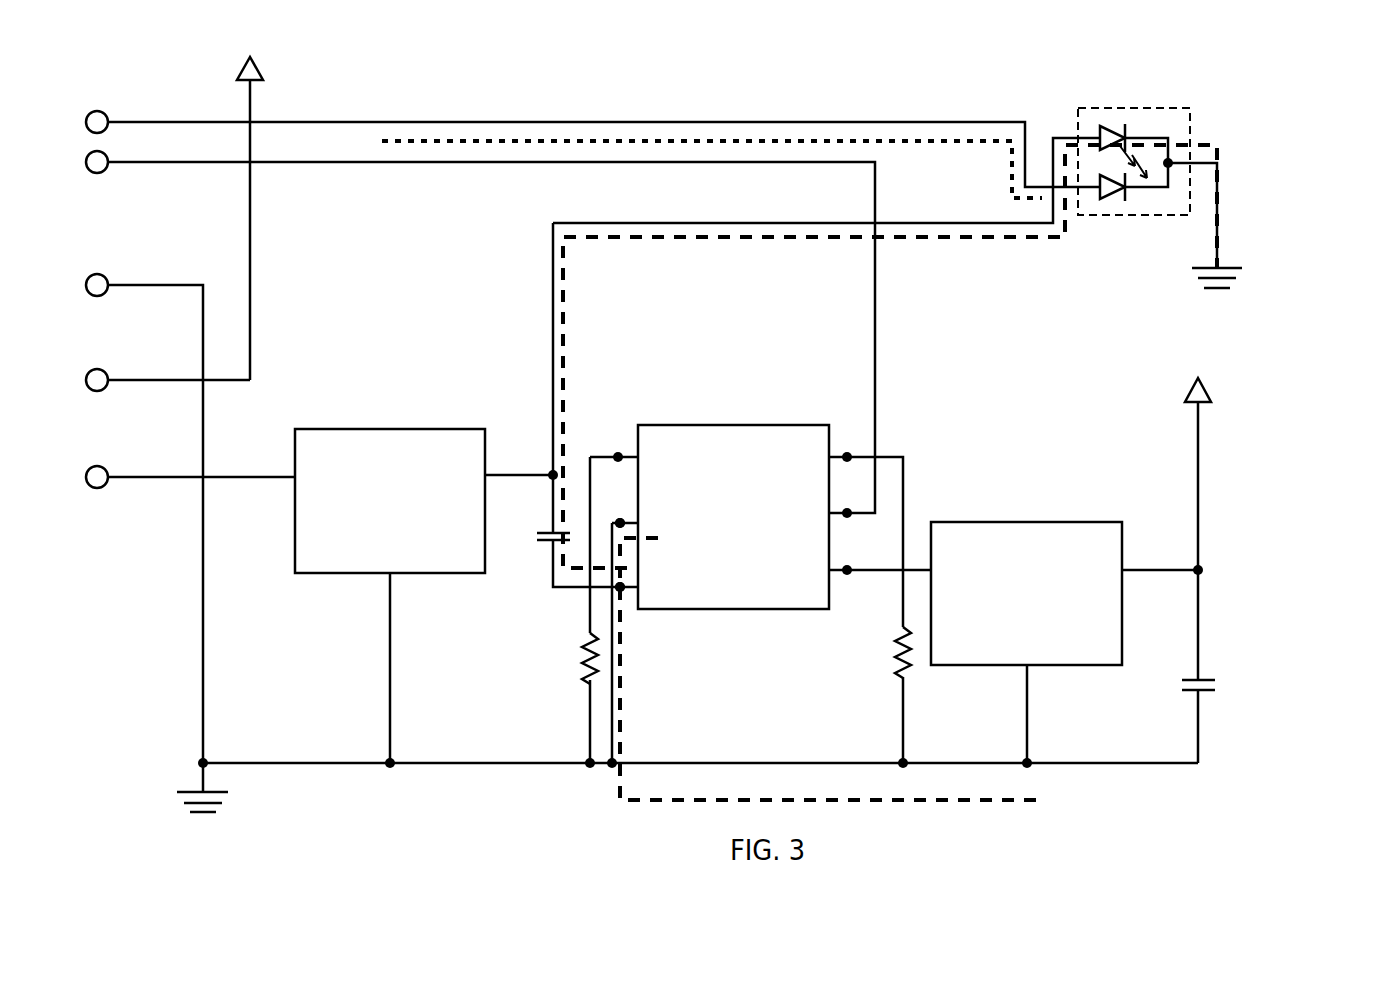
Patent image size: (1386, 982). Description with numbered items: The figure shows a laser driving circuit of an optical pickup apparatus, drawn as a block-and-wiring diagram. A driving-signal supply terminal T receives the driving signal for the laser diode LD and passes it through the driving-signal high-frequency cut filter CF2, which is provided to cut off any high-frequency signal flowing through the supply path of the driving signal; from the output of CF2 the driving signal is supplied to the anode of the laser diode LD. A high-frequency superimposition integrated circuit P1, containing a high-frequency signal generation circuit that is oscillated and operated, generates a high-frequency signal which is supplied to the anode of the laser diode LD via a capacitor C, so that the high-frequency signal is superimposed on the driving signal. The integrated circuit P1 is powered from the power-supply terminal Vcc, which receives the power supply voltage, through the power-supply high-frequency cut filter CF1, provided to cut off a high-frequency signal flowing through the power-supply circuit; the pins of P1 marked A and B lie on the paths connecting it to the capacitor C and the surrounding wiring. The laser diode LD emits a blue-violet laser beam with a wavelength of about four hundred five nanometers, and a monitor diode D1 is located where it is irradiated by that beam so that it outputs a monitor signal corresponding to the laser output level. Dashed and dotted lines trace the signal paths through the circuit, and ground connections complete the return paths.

The laser diode LD is at (1105, 126).
The monitor diode D1 is at (1120, 187).
The high-frequency superimposition integrated circuit P1 is at (733, 517).
The power-supply high-frequency cut filter CF1 is at (1026, 593).
The driving-signal high-frequency cut filter CF2 is at (390, 501).
The driving-signal supply terminal T is at (104, 489).
The power-supply terminal Vcc is at (798, 248).
The capacitor C is at (540, 544).
The terminal A of integrated circuit A is at (620, 590).
The terminal B of integrated circuit B is at (620, 523).